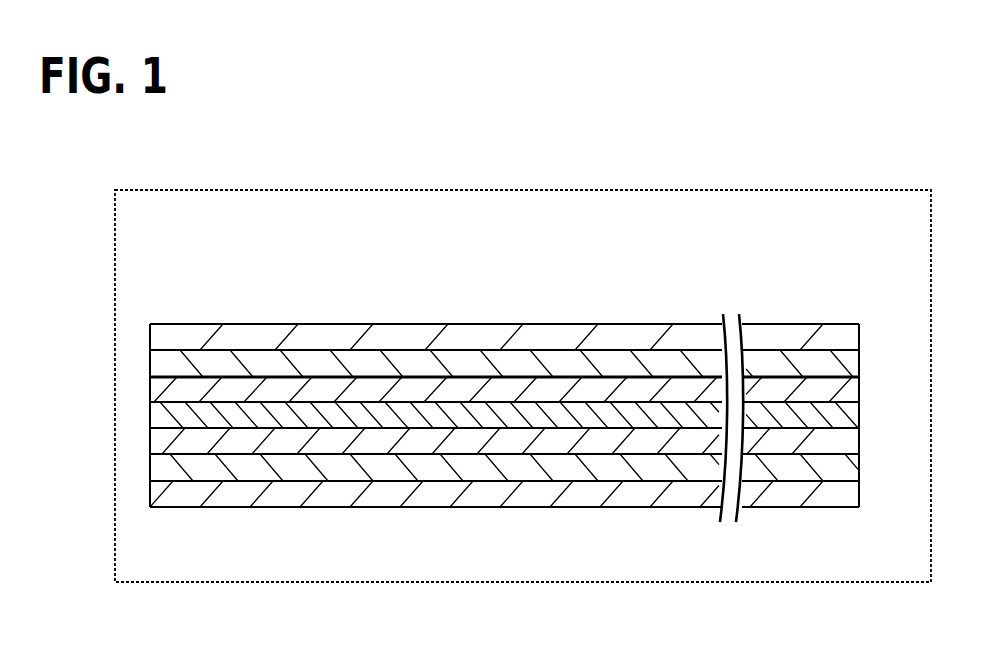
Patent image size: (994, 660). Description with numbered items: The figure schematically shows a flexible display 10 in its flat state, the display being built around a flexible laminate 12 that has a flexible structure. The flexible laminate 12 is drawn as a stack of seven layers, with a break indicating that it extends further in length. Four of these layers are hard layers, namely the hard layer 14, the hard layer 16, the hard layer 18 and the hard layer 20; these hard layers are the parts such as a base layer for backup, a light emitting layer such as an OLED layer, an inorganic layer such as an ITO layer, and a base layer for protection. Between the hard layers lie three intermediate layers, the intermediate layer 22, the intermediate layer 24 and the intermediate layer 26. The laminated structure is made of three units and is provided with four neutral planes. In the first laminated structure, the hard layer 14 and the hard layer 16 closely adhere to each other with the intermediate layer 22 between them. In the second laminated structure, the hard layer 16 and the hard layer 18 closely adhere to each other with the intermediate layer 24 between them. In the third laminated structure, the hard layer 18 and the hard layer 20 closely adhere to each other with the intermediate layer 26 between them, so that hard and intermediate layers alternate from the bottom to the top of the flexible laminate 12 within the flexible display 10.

The flexible display 10 is at (869, 190).
The flexible laminate 12 is at (832, 283).
The hard layer 14 is at (848, 494).
The hard layer 16 is at (848, 444).
The hard layer 18 is at (848, 390).
The hard layer 20 is at (848, 340).
The intermediate layer 22 is at (848, 466).
The intermediate layer 24 is at (848, 412).
The intermediate layer 26 is at (848, 362).